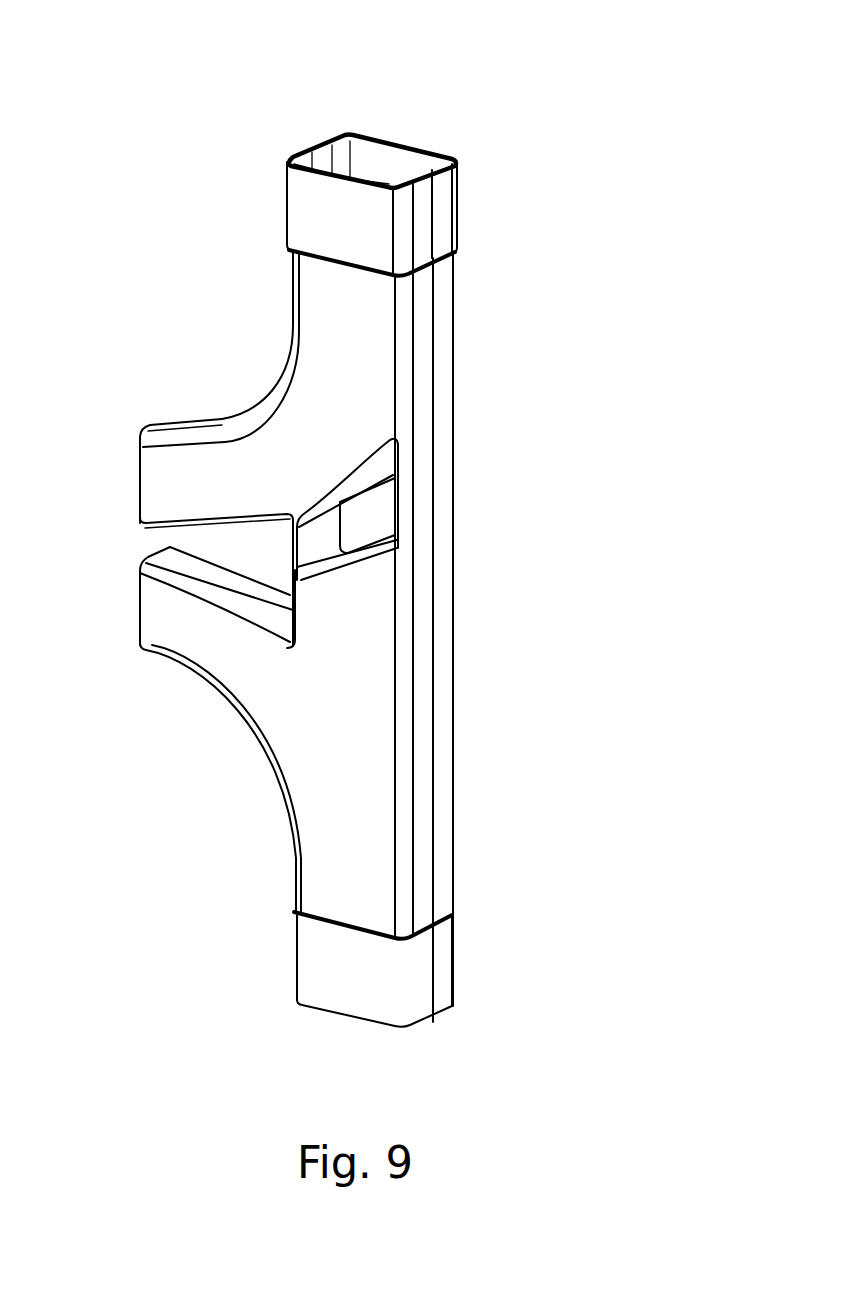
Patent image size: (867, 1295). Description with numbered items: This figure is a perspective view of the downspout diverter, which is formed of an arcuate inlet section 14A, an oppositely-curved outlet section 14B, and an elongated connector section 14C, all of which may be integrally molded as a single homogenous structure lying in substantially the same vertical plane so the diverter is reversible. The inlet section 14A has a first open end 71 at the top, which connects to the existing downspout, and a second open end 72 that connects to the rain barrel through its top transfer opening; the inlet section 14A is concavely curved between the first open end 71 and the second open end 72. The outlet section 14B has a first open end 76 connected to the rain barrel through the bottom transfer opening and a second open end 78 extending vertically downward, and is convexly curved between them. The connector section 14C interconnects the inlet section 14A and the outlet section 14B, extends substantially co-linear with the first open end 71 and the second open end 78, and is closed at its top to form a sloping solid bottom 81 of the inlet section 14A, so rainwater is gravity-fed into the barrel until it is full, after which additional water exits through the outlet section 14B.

The first open end 71 is at (378, 160).
The second open end 72 is at (138, 483).
The first open end 76 is at (150, 620).
The second open end 78 is at (433, 1017).
The sloping solid bottom 81 is at (387, 463).
The arcuate inlet section 14A is at (294, 412).
The outlet section 14B is at (197, 640).
The elongated connector section 14C is at (360, 625).